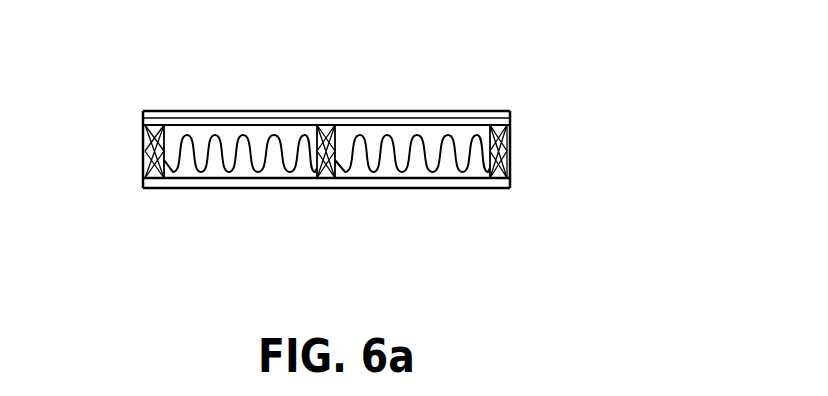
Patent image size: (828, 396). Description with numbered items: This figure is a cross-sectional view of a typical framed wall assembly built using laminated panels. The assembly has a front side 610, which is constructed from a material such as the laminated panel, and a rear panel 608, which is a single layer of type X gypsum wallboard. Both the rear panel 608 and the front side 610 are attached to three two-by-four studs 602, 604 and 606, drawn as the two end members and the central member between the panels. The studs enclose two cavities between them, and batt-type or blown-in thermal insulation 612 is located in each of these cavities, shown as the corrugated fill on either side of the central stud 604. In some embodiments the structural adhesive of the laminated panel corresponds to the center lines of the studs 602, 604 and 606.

The 2×4 stud 602 is at (142, 172).
The 2×4 stud 604 is at (315, 165).
The 2×4 stud 606 is at (510, 163).
The rear panel 608 is at (468, 195).
The front side 610 is at (515, 117).
The thermal insulation 612 is at (181, 165).